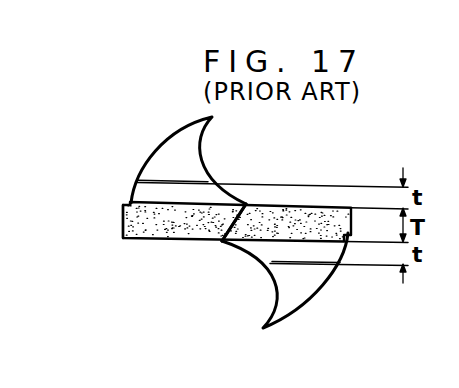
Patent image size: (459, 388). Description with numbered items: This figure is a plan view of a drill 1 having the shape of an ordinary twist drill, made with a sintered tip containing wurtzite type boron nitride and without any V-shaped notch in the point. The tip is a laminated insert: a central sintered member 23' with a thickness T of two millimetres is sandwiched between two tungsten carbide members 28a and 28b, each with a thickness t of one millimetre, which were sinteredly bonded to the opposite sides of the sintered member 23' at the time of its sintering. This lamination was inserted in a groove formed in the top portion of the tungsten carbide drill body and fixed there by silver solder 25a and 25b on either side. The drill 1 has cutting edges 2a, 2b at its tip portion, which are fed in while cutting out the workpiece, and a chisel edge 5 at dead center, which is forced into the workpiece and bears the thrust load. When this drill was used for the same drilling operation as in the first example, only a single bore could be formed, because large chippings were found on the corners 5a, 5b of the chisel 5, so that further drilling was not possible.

The drill 1 is at (164, 127).
The cutting edge 2a is at (306, 204).
The cutting edge 2b is at (155, 243).
The chisel edge 5 is at (230, 222).
The corner of chisel 5a is at (243, 202).
The corner of chisel 5b is at (223, 243).
The sintered member 23' is at (97, 238).
The silver solder 25a is at (292, 265).
The silver solder 25b is at (163, 176).
The tungsten carbide member 28a is at (320, 252).
The tungsten carbide member 28b is at (148, 193).